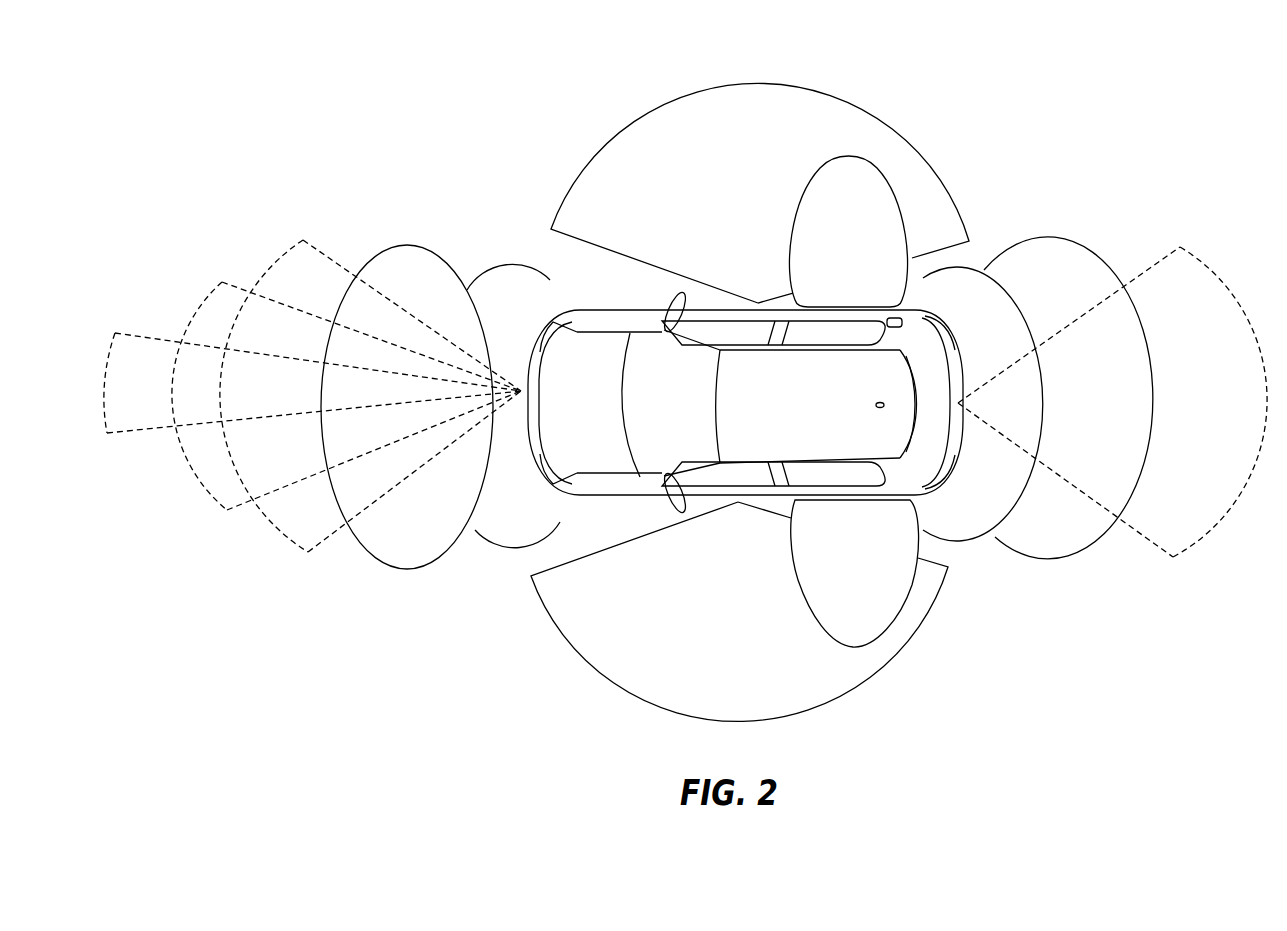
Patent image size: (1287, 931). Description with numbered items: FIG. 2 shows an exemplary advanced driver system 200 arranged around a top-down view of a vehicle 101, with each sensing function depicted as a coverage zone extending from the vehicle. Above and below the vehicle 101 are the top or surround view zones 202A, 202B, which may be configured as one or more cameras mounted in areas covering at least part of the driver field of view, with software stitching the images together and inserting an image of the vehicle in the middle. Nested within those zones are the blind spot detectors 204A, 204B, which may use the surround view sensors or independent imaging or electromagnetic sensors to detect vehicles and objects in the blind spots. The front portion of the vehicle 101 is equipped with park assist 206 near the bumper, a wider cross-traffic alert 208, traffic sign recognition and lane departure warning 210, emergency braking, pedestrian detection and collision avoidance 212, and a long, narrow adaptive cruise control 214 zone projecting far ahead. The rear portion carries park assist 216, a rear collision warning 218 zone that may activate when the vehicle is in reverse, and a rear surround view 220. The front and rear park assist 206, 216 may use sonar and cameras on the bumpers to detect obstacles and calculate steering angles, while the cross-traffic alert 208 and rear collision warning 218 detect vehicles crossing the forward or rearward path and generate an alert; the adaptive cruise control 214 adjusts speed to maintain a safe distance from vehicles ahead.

The vehicle 101 is at (773, 415).
The advanced driver system 200 is at (983, 74).
The surround view 202A is at (709, 182).
The surround view 202B is at (741, 654).
The blind spot detector 204A is at (829, 273).
The blind spot detector 204B is at (833, 603).
The park assist 206 is at (524, 267).
The cross-traffic alert 208 is at (429, 247).
The traffic sign recognition and lane departure warning 210 is at (308, 549).
The emergency braking/pedestrian detection/collision avoidance 212 is at (238, 284).
The adaptive cruise control 214 is at (109, 437).
The park assist 216 is at (979, 268).
The rear collision warning 218 is at (1049, 562).
The surround view 220 is at (1162, 261).